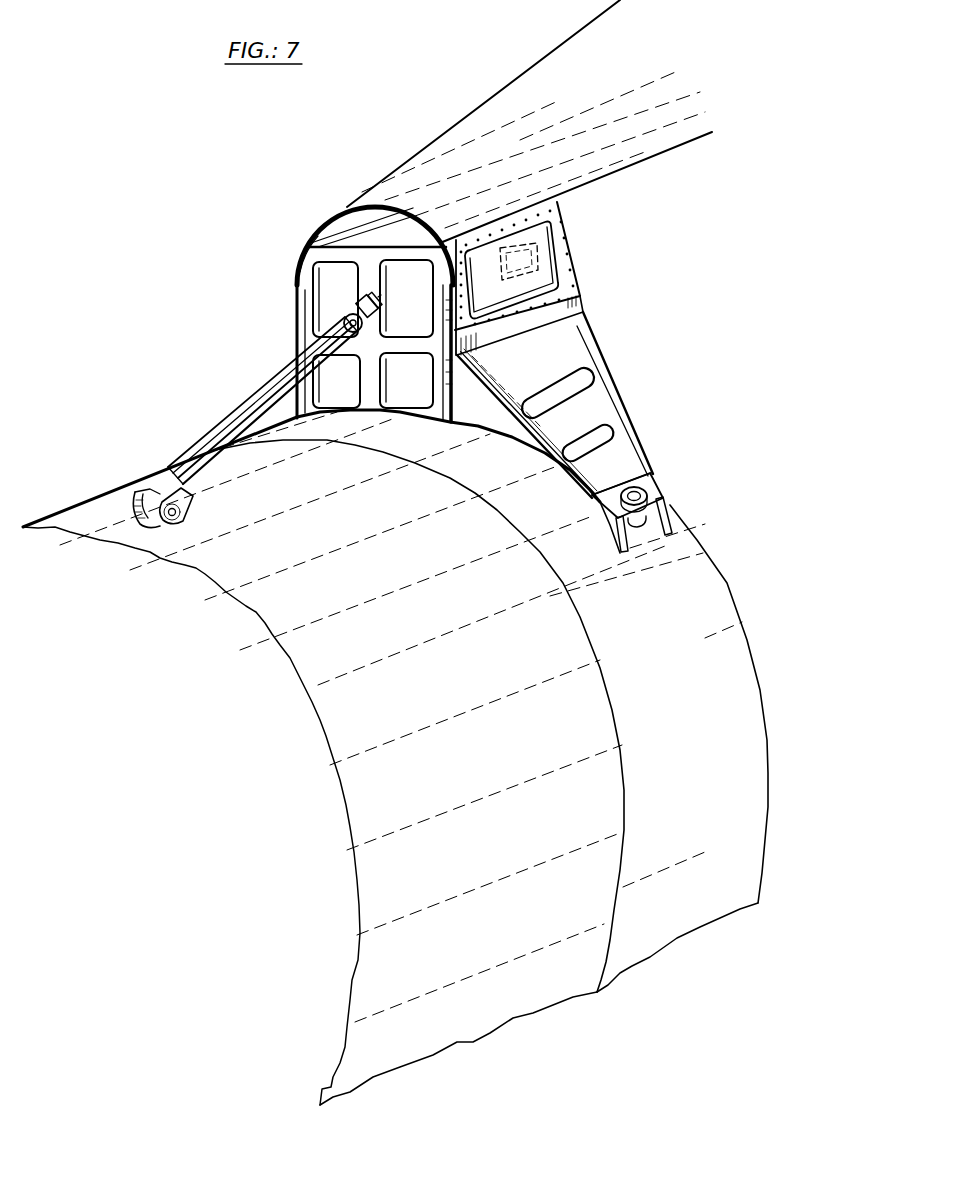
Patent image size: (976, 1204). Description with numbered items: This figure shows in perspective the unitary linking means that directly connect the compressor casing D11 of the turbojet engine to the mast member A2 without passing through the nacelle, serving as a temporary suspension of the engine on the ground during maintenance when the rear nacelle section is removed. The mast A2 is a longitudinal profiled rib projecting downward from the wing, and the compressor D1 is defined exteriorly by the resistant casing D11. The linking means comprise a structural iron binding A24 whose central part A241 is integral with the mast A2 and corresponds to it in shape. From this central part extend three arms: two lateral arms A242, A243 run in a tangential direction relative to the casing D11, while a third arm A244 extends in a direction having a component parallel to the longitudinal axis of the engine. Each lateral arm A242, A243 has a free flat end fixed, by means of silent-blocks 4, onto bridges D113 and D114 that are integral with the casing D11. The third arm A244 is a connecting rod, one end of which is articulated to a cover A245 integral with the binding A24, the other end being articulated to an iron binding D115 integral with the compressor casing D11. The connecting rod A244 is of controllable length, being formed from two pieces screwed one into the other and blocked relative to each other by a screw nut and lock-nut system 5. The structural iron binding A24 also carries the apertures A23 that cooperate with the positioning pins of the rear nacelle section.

The mast member A2 is at (564, 98).
The apertures A23 is at (540, 252).
The structural iron binding A24 is at (290, 296).
The central part A241 is at (305, 276).
The lateral arm A242 is at (574, 349).
The lateral arm A243 is at (225, 424).
The third arm A244 is at (280, 386).
The cover A245 is at (380, 298).
The screw nut and lock-nut 5 is at (346, 317).
The silent-blocks 4 is at (654, 490).
The compressor D1 is at (364, 783).
The compressor casing D11 is at (692, 601).
The bridge D113 is at (667, 511).
The bridge D114 is at (175, 461).
The iron binding D115 is at (145, 494).